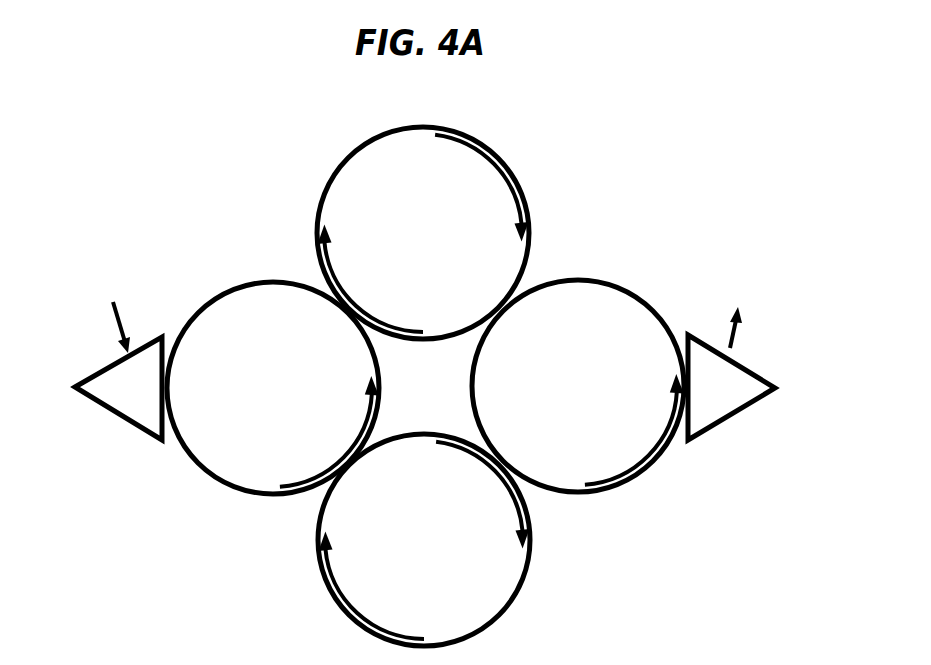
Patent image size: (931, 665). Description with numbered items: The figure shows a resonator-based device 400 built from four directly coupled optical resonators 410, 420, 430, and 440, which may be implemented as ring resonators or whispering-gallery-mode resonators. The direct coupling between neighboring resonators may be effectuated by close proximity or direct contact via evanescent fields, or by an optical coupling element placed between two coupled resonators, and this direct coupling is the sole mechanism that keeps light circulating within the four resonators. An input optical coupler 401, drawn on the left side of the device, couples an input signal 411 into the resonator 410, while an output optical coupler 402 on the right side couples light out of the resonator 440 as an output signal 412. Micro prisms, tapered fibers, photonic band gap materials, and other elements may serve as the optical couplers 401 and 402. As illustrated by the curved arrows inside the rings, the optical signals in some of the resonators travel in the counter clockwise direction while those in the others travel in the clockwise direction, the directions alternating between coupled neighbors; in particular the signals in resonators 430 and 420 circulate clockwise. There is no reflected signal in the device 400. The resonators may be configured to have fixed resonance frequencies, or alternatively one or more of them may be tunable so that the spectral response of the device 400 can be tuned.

The resonator-based device 400 is at (283, 108).
The input optical coupler 401 is at (132, 396).
The output optical coupler 402 is at (720, 405).
The optical resonator 410 is at (246, 398).
The optical resonator 420 is at (409, 550).
The optical resonator 430 is at (392, 238).
The optical resonator 440 is at (554, 398).
The input signal 411 is at (112, 320).
The output signal 412 is at (738, 338).